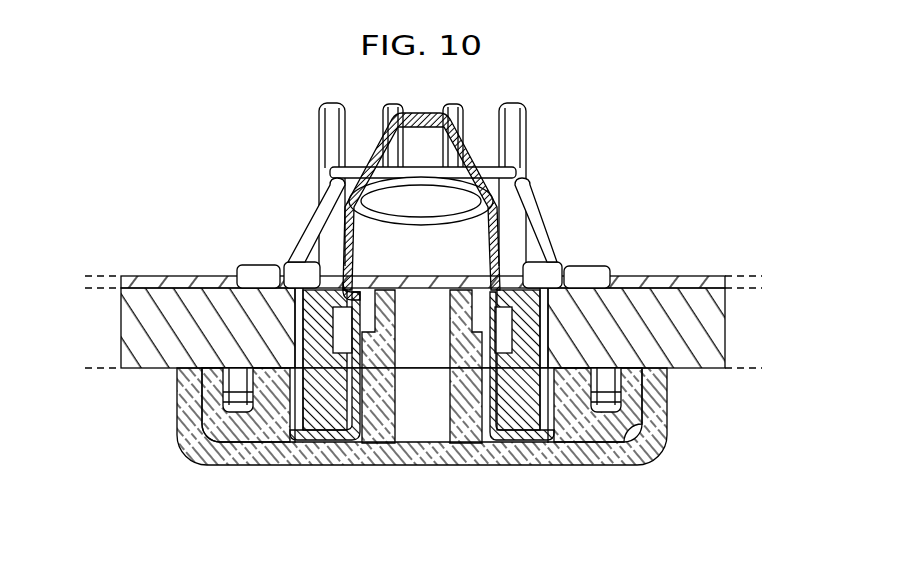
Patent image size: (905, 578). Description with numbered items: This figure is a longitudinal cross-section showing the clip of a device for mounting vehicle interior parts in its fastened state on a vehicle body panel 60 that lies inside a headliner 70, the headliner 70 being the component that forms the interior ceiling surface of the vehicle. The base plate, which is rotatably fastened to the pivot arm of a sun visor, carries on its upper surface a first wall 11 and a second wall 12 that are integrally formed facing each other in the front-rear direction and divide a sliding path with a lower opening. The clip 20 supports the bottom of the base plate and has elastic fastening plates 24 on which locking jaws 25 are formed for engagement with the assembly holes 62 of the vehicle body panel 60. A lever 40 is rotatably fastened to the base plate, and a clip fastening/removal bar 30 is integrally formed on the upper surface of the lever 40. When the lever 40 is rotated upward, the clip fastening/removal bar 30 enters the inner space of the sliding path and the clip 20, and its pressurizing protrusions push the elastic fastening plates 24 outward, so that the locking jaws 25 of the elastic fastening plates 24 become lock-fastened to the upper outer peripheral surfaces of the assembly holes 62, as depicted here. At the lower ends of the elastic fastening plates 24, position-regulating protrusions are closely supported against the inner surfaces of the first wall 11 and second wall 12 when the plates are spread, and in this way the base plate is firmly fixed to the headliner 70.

The first wall 11 is at (317, 417).
The second wall 12 is at (533, 432).
The clip 20 is at (357, 141).
The elastic fastening plate 24 is at (342, 240).
The locking jaw 25 is at (345, 277).
The clip fastening/removal bar 30 is at (398, 393).
The lever 40 is at (250, 470).
The vehicle body panel 60 is at (625, 277).
The assembly hole 62 is at (483, 250).
The headliner 70 is at (698, 348).